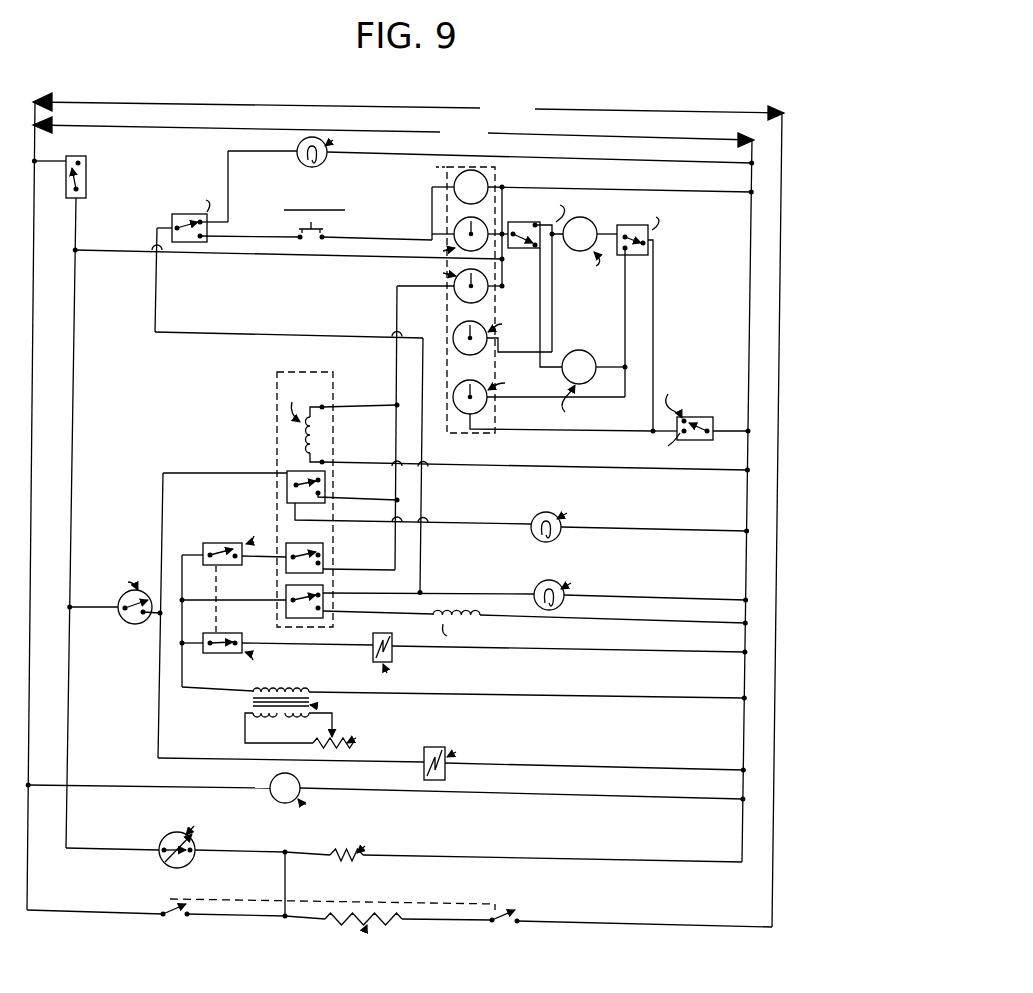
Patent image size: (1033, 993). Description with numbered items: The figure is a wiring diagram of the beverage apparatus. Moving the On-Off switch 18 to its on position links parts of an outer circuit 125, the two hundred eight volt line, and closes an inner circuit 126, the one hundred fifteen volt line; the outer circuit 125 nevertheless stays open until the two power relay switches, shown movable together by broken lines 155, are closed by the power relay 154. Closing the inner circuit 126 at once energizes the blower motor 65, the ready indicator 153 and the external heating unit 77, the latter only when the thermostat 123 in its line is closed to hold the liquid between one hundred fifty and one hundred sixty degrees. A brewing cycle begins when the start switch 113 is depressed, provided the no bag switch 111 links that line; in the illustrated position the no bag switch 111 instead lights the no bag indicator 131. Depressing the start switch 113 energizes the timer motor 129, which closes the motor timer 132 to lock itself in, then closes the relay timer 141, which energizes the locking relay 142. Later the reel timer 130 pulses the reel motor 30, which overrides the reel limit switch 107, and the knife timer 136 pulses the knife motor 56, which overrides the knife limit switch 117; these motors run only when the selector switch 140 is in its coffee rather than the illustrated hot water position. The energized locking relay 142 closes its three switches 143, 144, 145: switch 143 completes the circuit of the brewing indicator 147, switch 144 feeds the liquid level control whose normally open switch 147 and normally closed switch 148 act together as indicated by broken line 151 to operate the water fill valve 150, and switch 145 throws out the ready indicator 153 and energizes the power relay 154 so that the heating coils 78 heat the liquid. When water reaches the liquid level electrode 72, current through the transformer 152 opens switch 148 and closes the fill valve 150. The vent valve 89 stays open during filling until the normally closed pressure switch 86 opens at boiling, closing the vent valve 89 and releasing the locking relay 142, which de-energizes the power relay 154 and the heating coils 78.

The outer circuit 125 is at (365, 104).
The inner circuit 126 is at (310, 132).
The On-Off switch 18 is at (88, 180).
The no bag switch 111 is at (171, 219).
The no bag indicator 131 is at (320, 160).
The start switch 113 is at (329, 231).
The timer motor 129 is at (496, 166).
The motor timer 132 is at (450, 225).
The relay timer 141 is at (453, 296).
The reel timer 130 is at (453, 333).
The knife timer 136 is at (489, 410).
The reel limit switch 107 is at (527, 250).
The reel motor 30 is at (576, 218).
The knife limit switch 117 is at (656, 240).
The knife motor 56 is at (577, 348).
The selector switch 140 is at (713, 443).
The locking relay 142 is at (333, 392).
The locking relay switch 143 is at (326, 487).
The locking relay switch 144 is at (326, 559).
The locking relay switch 145 is at (326, 604).
The brewing indicator / liquid level control switch 147 is at (548, 510).
The ready indicator 153 is at (540, 586).
The power relay 154 is at (458, 612).
The water fill valve 150 is at (386, 634).
The broken line 151 is at (218, 596).
The liquid level control switch 148 is at (227, 633).
The pressure switch 86 is at (140, 626).
The transformer 152 is at (285, 689).
The liquid level electrode 72 is at (352, 744).
The vent valve 89 is at (443, 748).
The blower motor 65 is at (299, 782).
The thermostat 123 is at (197, 863).
The external heating unit 77 is at (333, 863).
The heating coils 78 is at (371, 907).
The broken lines 155 is at (411, 902).